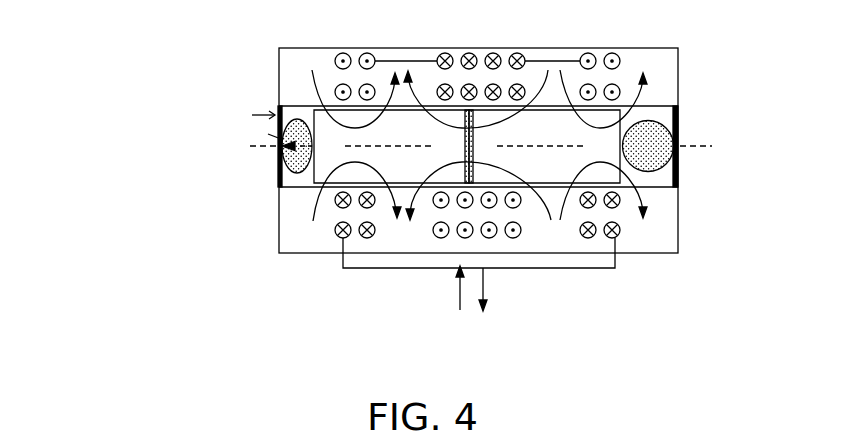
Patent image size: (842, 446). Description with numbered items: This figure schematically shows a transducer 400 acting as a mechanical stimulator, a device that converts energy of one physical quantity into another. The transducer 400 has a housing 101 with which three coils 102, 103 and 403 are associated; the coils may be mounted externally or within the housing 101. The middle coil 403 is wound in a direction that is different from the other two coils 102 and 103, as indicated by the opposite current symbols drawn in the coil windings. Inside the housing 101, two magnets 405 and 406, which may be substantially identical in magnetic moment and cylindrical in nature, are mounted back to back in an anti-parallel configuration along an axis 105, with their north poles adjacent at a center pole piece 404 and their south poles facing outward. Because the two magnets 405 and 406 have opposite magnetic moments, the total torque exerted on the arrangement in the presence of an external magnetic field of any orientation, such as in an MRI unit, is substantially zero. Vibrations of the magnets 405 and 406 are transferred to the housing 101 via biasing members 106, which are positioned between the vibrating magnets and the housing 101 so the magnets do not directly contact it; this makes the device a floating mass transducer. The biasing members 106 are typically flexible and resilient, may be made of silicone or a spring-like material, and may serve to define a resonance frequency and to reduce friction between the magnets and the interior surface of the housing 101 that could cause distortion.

The transducer 400 is at (113, 130).
The housing 101 is at (300, 47).
The coil 102 is at (345, 53).
The middle coil 403 is at (470, 51).
The coil 103 is at (612, 51).
The center pole piece 404 is at (473, 139).
The magnet 405 is at (424, 174).
The magnet 406 is at (567, 174).
The axis 105 is at (688, 148).
The biasing member 106 is at (279, 162).